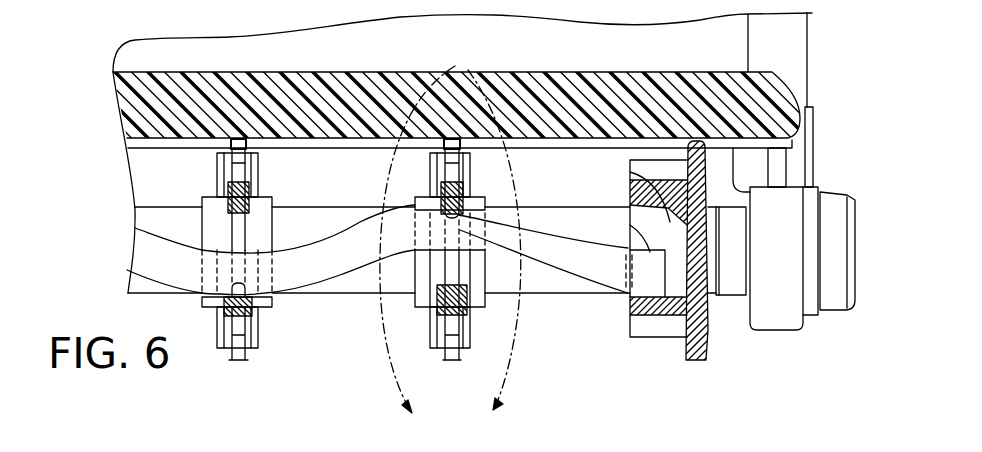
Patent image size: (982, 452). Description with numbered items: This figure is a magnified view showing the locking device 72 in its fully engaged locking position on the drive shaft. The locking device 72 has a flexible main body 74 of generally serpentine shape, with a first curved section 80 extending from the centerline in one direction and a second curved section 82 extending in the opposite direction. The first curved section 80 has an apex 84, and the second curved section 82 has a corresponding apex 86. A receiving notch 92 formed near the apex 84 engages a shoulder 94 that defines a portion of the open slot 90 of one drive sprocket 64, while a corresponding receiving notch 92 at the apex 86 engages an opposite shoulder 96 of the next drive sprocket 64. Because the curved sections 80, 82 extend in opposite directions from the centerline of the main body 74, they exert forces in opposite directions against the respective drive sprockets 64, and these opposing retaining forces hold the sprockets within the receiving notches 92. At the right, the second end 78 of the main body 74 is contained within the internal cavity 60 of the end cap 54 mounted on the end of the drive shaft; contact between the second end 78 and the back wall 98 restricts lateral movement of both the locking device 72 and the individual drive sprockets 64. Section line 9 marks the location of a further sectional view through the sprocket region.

The end cap 54 is at (702, 340).
The internal cavity 60 is at (651, 243).
The drive sprocket 64 is at (378, 204).
The locking device 72 is at (379, 262).
The main body 74 is at (135, 265).
The second end 78 is at (630, 222).
The first curved section 80 is at (400, 235).
The second curved section 82 is at (187, 277).
The apex 84 is at (410, 205).
The apex 86 is at (205, 297).
The open slot 90 is at (452, 270).
The receiving notch 92 is at (243, 282).
The shoulder 94 is at (460, 216).
The opposite shoulder 96 is at (253, 298).
The back wall 98 is at (700, 258).
The section line 9- 9 is at (451, 243).